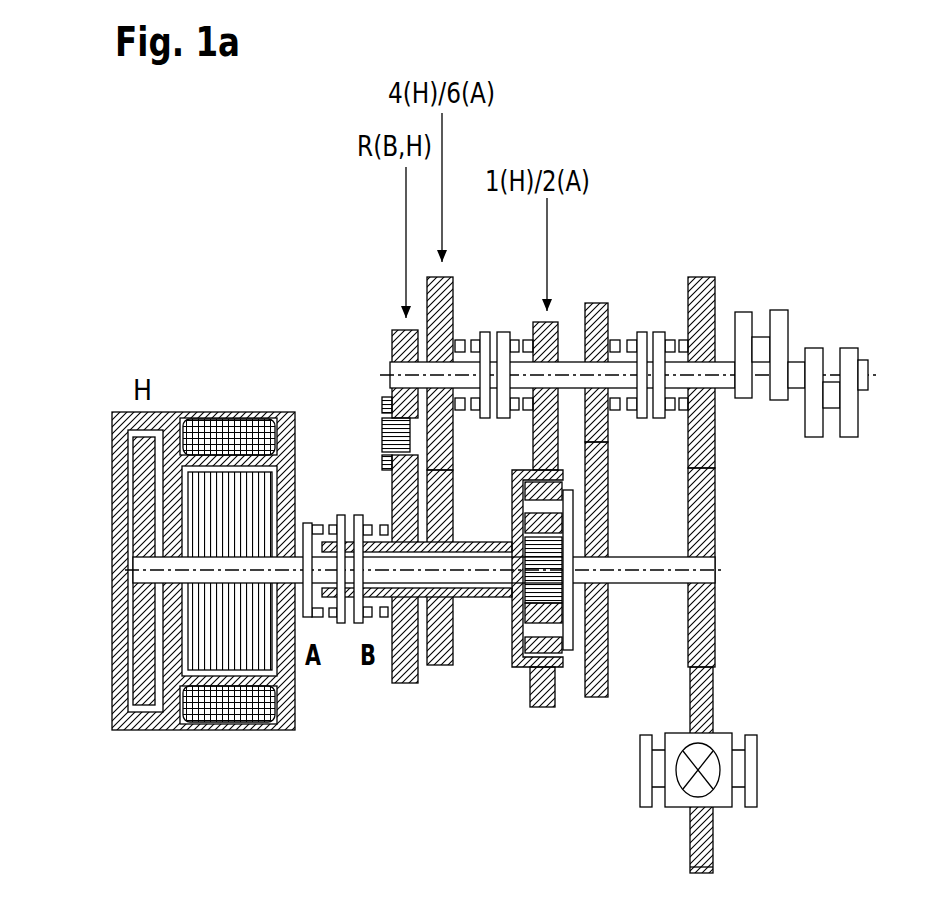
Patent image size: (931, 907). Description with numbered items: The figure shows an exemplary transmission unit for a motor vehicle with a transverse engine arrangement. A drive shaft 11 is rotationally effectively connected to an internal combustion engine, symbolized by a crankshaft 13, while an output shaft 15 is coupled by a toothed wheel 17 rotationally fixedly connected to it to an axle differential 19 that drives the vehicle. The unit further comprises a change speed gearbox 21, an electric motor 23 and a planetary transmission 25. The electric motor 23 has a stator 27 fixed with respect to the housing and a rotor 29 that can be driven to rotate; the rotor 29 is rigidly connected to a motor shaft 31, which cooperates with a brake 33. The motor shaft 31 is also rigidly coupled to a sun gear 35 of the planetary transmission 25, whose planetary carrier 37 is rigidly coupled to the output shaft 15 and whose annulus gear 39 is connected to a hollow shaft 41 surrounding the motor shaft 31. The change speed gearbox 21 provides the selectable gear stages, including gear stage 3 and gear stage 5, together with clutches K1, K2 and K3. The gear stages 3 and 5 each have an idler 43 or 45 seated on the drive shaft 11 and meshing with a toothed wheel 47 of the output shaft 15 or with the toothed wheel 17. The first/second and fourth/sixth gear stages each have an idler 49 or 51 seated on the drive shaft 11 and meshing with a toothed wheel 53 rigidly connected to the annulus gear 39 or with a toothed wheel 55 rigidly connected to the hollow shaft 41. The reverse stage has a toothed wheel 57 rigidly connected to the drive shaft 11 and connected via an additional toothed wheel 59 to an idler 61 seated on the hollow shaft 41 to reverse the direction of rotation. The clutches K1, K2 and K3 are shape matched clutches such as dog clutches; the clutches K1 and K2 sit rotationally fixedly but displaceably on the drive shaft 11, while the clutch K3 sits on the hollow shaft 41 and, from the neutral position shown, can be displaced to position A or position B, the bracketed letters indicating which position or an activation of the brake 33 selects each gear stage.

The gear stage 3 is at (600, 298).
The gear stage 5 is at (705, 272).
The drive shaft 11 is at (725, 386).
The crankshaft 13 is at (796, 365).
The output shaft 15 is at (655, 572).
The toothed wheel 17 is at (716, 525).
The axle differential 19 is at (722, 800).
The change speed gearbox 21 is at (332, 322).
The electric motor 23 is at (172, 392).
The planetary transmission 25 is at (519, 733).
The stator 27 is at (235, 426).
The rotor 29 is at (215, 622).
The motor shaft 31 is at (180, 577).
The brake 33 is at (140, 492).
The sun gear 35 is at (520, 556).
The planetary carrier 37 is at (570, 655).
The annulus gear 39 is at (511, 640).
The hollow shaft 41 is at (472, 600).
The idler 43 is at (606, 302).
The idler 45 is at (716, 280).
The toothed wheel 47 is at (602, 699).
The idler 49 is at (549, 321).
The idler 51 is at (454, 296).
The toothed wheel 53 is at (540, 708).
The toothed wheel 55 is at (438, 666).
The toothed wheel 57 is at (400, 334).
The additional toothed wheel 59 is at (384, 437).
The idler 61 is at (396, 682).
The clutch K1 is at (487, 332).
The clutch K2 is at (641, 332).
The clutch K3 is at (343, 520).